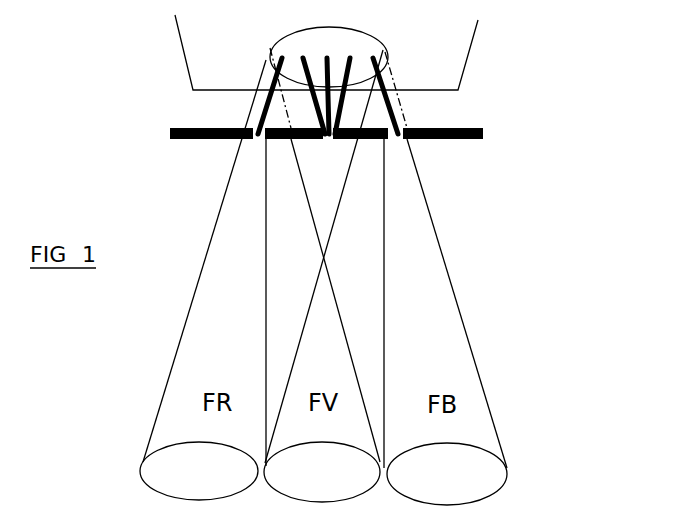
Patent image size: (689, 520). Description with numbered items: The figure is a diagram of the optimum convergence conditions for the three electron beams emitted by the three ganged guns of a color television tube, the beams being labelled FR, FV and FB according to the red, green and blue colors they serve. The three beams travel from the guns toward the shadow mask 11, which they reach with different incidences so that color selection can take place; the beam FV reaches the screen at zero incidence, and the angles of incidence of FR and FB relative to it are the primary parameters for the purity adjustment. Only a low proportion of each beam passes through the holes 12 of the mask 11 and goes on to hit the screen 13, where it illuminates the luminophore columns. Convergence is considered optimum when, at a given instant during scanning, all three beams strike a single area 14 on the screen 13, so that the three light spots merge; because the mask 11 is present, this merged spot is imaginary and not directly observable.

The shadow mask 11 is at (476, 140).
The holes 12 is at (333, 130).
The screen 13 is at (463, 70).
The single area 14 is at (372, 34).